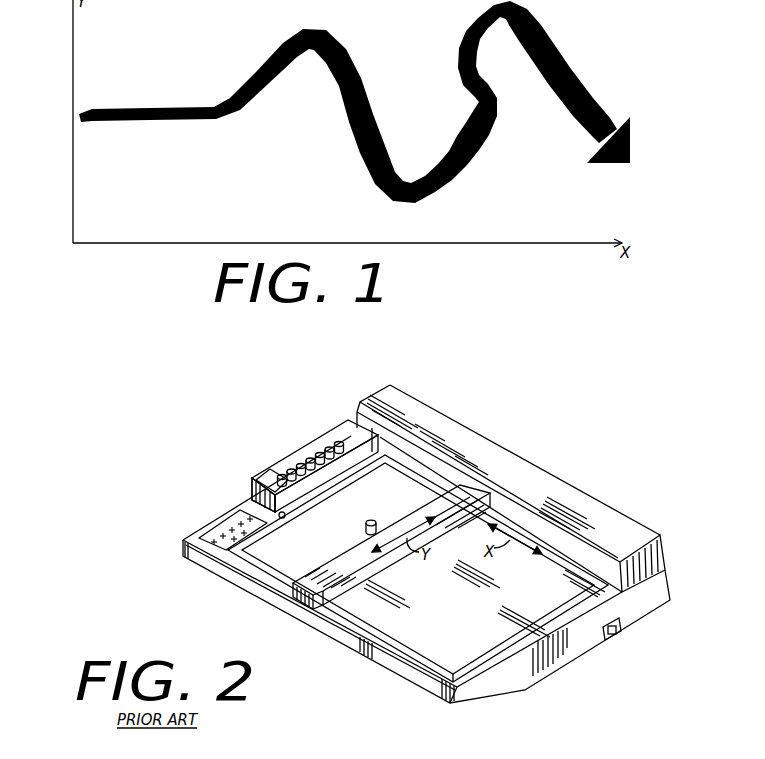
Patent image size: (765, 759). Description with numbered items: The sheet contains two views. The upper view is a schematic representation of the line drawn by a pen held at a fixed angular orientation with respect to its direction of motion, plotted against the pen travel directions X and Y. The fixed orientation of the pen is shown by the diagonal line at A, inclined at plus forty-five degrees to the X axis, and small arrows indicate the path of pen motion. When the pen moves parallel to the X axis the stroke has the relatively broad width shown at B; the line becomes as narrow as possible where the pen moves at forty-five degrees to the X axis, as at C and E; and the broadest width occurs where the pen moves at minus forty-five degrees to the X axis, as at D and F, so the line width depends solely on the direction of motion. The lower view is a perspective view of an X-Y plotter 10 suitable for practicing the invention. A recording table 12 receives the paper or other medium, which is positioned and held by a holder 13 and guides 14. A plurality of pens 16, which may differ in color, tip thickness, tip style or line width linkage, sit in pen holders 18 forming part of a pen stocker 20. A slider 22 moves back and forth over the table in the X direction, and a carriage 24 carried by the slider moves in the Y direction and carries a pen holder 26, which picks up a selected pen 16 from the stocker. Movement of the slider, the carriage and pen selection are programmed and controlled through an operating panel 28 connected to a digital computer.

In FIG. 2, the digitizer tablet 10 is at (536, 446).
In FIG. 2, the recording table 12 is at (409, 645).
In FIG. 2, the holder 13 is at (284, 518).
In FIG. 2, the guides 14 is at (363, 623).
In FIG. 2, the pens 16 is at (343, 457).
In FIG. 2, the pen holders 18 is at (298, 477).
In FIG. 2, the pen stocker 20 is at (292, 482).
In FIG. 2, the slider 22 is at (315, 575).
In FIG. 2, the carriage 24 is at (344, 552).
In FIG. 2, the pen holder 26 is at (364, 526).
In FIG. 2, the operating panel 28 is at (214, 532).
In FIG. 1, the diagonal line showing fixed pen orientation A is at (128, 107).
In FIG. 1, the relatively broad line width B is at (130, 143).
In FIG. 1, the narrowest line width C is at (247, 113).
In FIG. 1, the broadest line width D is at (390, 117).
In FIG. 1, the narrowest line width E is at (480, 180).
In FIG. 1, the broadest line width F is at (576, 45).